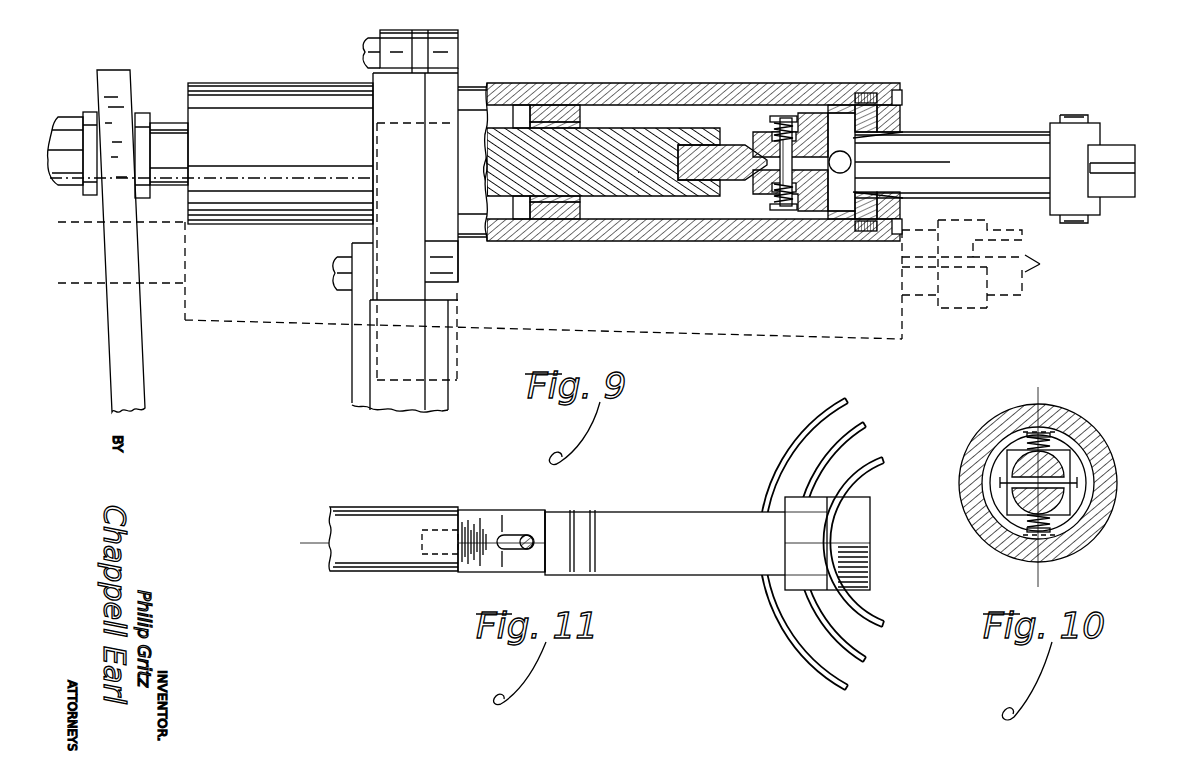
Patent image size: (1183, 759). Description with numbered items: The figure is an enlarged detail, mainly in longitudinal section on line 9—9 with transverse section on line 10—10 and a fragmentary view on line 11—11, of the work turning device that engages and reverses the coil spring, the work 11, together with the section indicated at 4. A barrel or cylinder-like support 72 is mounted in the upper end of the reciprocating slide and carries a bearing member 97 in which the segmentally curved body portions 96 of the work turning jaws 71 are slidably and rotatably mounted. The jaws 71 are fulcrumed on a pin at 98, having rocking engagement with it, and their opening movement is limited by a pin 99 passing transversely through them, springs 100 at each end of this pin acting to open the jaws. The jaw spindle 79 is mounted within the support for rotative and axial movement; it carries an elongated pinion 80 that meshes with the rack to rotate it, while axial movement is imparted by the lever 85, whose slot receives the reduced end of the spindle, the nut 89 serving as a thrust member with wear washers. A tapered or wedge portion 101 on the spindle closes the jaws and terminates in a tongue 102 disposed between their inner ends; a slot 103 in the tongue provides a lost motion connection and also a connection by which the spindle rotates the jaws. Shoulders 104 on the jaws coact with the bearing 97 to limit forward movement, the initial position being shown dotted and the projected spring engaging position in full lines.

In FIG. 9, the section line 4- 4 is at (380, 18).
In FIG. 11, the section line 9— 9 is at (293, 517).
In FIG. 10, the section line 9— 9 is at (1036, 387).
In FIG. 9, the section line 10— 10 is at (853, 83).
In FIG. 9, the spring 11 is at (640, 126).
In FIG. 11, the spring 11 is at (782, 627).
In FIG. 9, the work turning jaws 71 is at (1112, 143).
In FIG. 11, the work turning jaws 71 is at (862, 517).
In FIG. 9, the barrel or cylinder-like support 72 is at (692, 93).
In FIG. 10, the barrel or cylinder-like support 72 is at (1097, 442).
In FIG. 9, the jaw spindle 79 is at (166, 140).
In FIG. 11, the jaw spindle 79 is at (393, 518).
In FIG. 9, the elongated pinion 80 is at (502, 117).
In FIG. 9, the lever 85 is at (113, 85).
In FIG. 9, the nut 89 is at (68, 125).
In FIG. 9, the segmentally curved body portions 96 is at (963, 183).
In FIG. 11, the segmentally curved body portions 96 is at (657, 512).
In FIG. 10, the segmentally curved body portions 96 is at (1067, 492).
In FIG. 9, the bearing member 97 is at (870, 143).
In FIG. 9, the jaw fulcrum pin 98 is at (852, 162).
In FIG. 11, the jaw fulcrum pin 98 is at (581, 522).
In FIG. 10, the jaw fulcrum pin 98 is at (1007, 483).
In FIG. 9, the pin 99 is at (780, 175).
In FIG. 11, the pin 99 is at (522, 550).
In FIG. 10, the pin 99 is at (1047, 530).
In FIG. 9, the springs 100 is at (787, 116).
In FIG. 10, the springs 100 is at (1048, 437).
In FIG. 9, the tapered or wedge portion 101 is at (727, 176).
In FIG. 11, the tapered or wedge portion 101 is at (485, 570).
In FIG. 9, the tongue 102 is at (812, 150).
In FIG. 11, the tongue 102 is at (527, 565).
In FIG. 9, the slot 103 is at (767, 155).
In FIG. 11, the slot 103 is at (512, 535).
In FIG. 9, the shoulders 104 is at (903, 197).
In FIG. 10, the shoulders 104 is at (1060, 457).